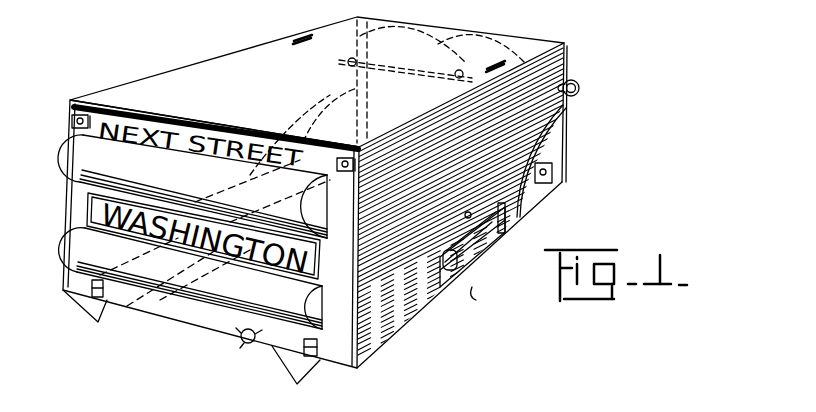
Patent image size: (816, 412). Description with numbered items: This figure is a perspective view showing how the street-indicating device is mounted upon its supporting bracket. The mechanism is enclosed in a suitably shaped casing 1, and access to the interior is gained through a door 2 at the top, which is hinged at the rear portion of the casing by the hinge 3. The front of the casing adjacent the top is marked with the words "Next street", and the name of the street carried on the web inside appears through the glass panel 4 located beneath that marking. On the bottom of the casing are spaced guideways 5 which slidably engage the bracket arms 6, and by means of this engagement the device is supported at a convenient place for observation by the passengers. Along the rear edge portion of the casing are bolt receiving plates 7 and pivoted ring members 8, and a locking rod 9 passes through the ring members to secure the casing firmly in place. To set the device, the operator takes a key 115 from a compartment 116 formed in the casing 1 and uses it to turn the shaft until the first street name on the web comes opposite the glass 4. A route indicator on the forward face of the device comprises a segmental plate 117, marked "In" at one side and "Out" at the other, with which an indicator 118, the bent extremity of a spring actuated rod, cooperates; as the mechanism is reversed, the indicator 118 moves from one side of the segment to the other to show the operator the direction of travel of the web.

The casing 1 is at (158, 98).
The door 2 is at (257, 57).
The hinge 3 is at (304, 32).
The glass panel 4 is at (65, 207).
The guideways 5 is at (117, 307).
The bracket arms 6 is at (93, 308).
The bolt receiving plates 7 is at (553, 168).
The pivoted ring members 8 is at (576, 80).
The locking rod 9 is at (577, 97).
The key 115 is at (453, 231).
The compartment 116 is at (487, 221).
The segmental plate 117 is at (245, 313).
The indicator 118 is at (233, 338).